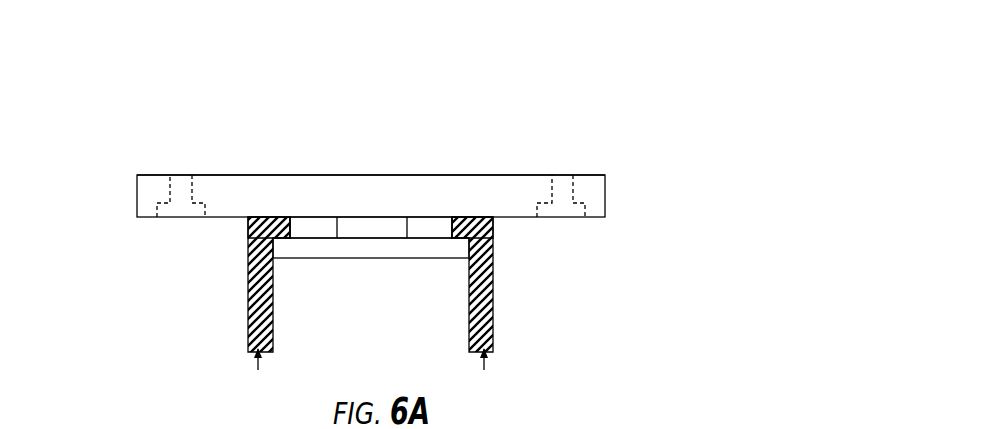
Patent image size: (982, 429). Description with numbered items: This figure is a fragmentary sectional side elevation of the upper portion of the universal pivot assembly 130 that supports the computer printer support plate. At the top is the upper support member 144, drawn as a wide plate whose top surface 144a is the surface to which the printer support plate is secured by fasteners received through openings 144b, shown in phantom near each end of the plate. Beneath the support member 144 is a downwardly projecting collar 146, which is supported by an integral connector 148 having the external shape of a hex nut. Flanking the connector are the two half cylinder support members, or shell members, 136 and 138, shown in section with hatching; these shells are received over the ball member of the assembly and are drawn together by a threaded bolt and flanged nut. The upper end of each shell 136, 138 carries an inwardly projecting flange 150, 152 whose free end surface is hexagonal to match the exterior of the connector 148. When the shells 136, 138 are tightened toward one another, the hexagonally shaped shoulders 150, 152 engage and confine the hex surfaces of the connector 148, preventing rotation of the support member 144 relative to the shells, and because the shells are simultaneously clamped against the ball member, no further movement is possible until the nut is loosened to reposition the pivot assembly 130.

The universal pivot assembly 130 is at (607, 93).
The half cylinder support member 136 is at (492, 310).
The half cylinder support member 138 is at (255, 278).
The upper support member 144 is at (491, 178).
The top surface 144a is at (236, 175).
The openings 144b is at (186, 176).
The collar 146 is at (308, 258).
The connector 148 is at (360, 225).
The inwardly projecting flange 150 is at (458, 222).
The inwardly projecting flange 152 is at (273, 222).